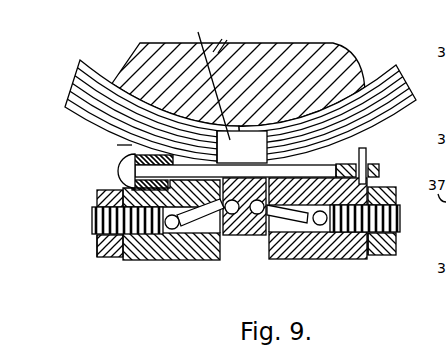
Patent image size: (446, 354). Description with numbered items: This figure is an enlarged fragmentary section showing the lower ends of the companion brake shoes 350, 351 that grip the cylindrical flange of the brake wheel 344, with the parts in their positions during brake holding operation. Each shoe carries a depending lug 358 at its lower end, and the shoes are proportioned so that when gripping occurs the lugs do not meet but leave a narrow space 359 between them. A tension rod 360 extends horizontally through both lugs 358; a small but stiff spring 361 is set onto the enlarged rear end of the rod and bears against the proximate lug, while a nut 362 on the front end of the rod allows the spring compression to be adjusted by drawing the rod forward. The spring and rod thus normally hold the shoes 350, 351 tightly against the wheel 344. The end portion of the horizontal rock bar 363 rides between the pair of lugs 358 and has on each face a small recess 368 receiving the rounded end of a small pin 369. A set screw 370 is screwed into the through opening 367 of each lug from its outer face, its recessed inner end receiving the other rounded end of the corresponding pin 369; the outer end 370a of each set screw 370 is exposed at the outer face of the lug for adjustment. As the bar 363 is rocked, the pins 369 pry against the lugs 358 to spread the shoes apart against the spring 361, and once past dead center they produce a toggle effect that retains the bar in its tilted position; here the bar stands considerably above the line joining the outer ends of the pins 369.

The brake wheel 344 is at (307, 52).
The brake shoe 351 is at (73, 85).
The brake shoe 350 is at (404, 80).
The narrow space 359 is at (204, 77).
The tension rod 360 is at (254, 173).
The rock bar 363 is at (243, 173).
The spring 361 is at (122, 146).
The nut 362 is at (368, 158).
The depending lug 358 is at (153, 262).
The set screw 370 is at (91, 229).
The nut end 370a is at (98, 256).
The recess 368 is at (242, 235).
The pin 369 is at (198, 230).
The through opening 367 is at (174, 238).